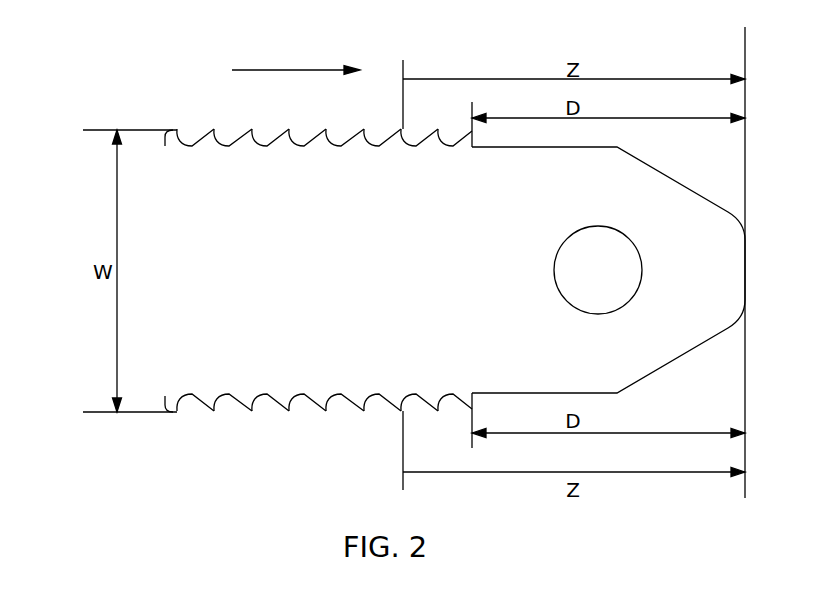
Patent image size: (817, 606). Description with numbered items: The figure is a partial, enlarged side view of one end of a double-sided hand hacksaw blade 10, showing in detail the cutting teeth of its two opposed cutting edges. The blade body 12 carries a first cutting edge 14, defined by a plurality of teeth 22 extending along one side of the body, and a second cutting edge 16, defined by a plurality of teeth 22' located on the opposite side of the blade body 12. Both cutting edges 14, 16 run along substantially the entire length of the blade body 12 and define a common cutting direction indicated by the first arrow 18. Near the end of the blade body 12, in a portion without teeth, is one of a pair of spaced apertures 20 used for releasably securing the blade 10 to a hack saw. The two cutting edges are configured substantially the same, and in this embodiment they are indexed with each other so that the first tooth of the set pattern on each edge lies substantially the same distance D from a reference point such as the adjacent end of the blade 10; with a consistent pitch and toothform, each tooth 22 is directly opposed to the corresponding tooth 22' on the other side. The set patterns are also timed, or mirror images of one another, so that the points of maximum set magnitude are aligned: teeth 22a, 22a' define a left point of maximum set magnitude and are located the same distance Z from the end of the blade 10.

The double-sided hand hacksaw blade 10 is at (648, 45).
The blade body 12 is at (643, 188).
The first cutting edge 14 is at (318, 118).
The second cutting edge 16 is at (318, 421).
The first arrow 18 is at (296, 59).
The aperture 20 is at (598, 270).
The teeth 22 is at (326, 118).
The tooth 22a is at (382, 123).
The teeth 22' is at (268, 421).
The tooth 22a' is at (344, 420).